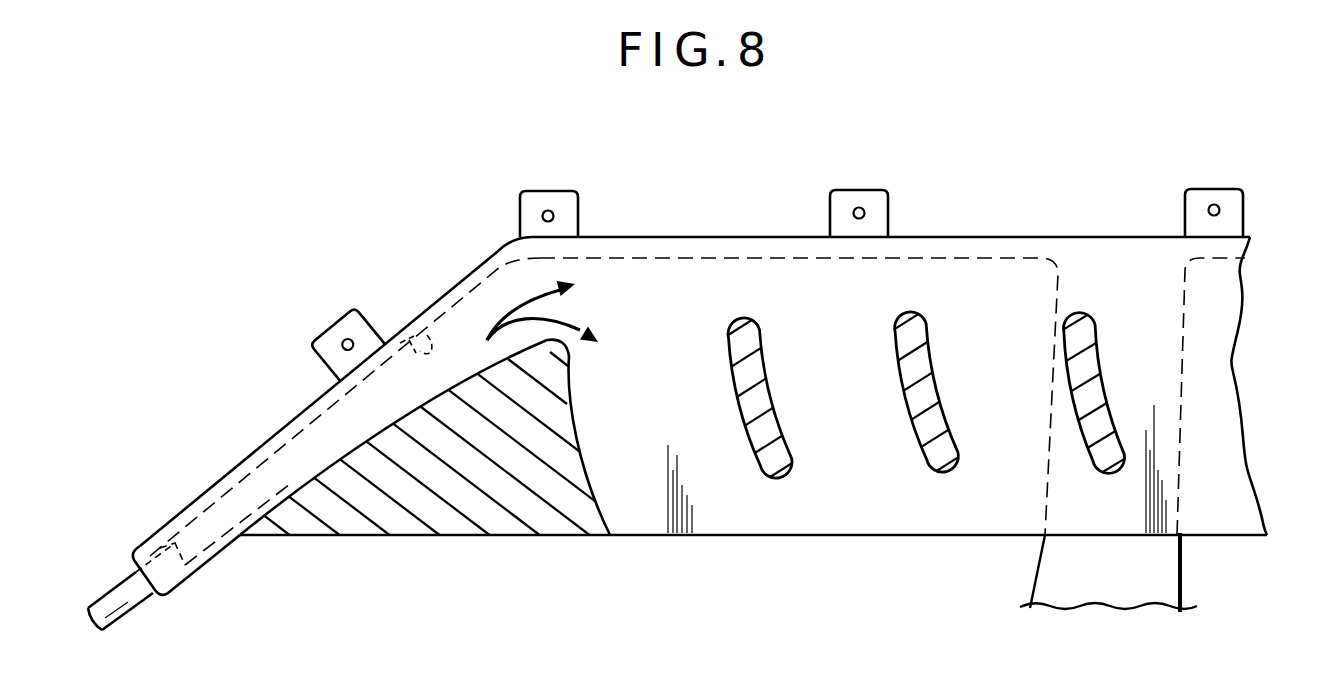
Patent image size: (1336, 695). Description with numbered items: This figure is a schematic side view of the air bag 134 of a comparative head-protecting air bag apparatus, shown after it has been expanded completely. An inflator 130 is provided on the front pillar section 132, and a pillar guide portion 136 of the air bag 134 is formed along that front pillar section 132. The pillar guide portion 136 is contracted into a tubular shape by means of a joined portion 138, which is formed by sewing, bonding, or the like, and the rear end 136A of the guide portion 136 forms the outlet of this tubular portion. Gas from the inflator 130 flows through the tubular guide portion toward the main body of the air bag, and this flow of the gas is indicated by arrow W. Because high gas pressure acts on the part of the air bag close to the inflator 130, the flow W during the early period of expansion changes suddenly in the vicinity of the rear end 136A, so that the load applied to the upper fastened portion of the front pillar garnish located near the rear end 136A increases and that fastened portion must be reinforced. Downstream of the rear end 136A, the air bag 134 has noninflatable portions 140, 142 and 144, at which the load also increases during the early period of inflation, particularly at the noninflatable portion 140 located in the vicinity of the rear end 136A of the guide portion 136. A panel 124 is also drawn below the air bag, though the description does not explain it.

The wall panel 124 is at (1172, 575).
The inflator 130 is at (133, 613).
The front pillar section 132 is at (427, 335).
The air bag 134 is at (779, 232).
The pillar guide portion 136 is at (335, 437).
The rear end 136A is at (563, 303).
The joined portion 138 is at (490, 517).
The noninflatable portion 140 is at (743, 437).
The noninflatable portion 142 is at (903, 413).
The noninflatable portion 144 is at (1077, 423).
The flow of the gas W is at (492, 333).